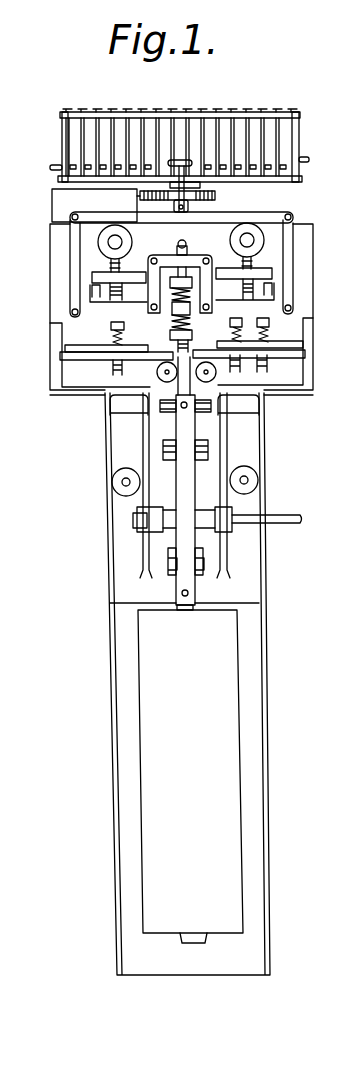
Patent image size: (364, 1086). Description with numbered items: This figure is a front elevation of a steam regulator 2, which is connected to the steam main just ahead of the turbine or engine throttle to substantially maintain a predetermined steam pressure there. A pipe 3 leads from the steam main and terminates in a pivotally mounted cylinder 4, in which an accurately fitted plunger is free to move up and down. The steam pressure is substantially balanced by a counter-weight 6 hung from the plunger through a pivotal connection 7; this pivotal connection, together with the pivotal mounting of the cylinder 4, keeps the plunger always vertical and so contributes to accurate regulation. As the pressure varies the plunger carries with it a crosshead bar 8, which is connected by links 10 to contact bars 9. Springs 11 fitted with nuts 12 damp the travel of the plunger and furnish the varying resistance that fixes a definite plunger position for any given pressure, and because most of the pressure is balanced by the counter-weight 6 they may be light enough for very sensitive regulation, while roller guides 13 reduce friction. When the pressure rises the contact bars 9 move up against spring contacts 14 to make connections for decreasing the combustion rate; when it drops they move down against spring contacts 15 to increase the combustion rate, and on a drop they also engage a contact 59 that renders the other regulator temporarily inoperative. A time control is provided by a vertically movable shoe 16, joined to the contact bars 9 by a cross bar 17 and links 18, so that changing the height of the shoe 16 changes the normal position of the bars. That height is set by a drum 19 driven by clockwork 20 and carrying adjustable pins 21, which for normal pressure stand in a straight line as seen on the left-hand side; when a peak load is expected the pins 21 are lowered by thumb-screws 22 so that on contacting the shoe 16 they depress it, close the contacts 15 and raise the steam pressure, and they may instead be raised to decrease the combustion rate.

The steam regulator 2 is at (264, 575).
The pipe 3 is at (282, 515).
The cylinder 4 is at (198, 470).
The counter-weight 6 is at (190, 776).
The pivotal connection 7 is at (181, 407).
The crosshead bar 8 is at (189, 257).
The contact bars 9 is at (147, 310).
The links 10 is at (182, 263).
The springs 11 is at (176, 306).
The nuts 12 is at (190, 280).
The roller guides 13 is at (157, 373).
The spring contacts 14 is at (105, 297).
The spring contacts 15 is at (111, 330).
The shoe 16 is at (186, 160).
The cross bar 17 is at (242, 212).
The links 18 is at (75, 269).
The drum 19 is at (299, 133).
The clockwork 20 is at (66, 205).
The pins 21 is at (50, 170).
The thumb-screws 22 is at (240, 110).
The contact 59 is at (226, 375).